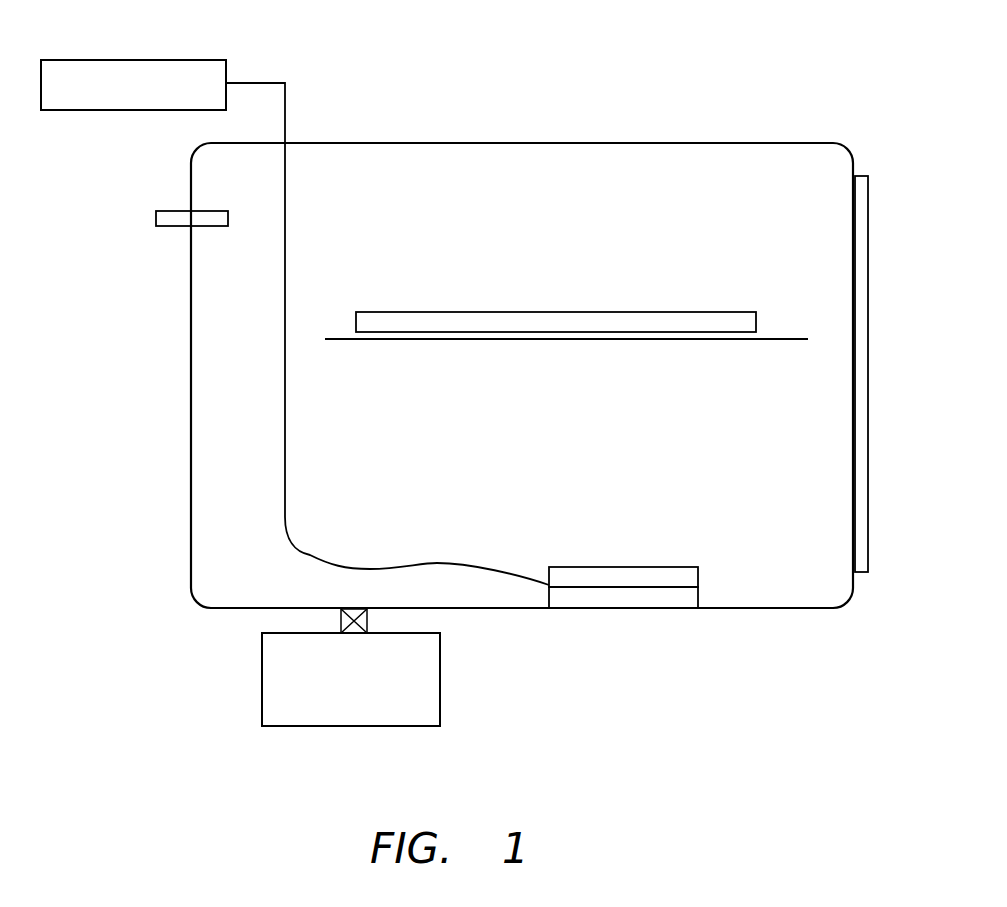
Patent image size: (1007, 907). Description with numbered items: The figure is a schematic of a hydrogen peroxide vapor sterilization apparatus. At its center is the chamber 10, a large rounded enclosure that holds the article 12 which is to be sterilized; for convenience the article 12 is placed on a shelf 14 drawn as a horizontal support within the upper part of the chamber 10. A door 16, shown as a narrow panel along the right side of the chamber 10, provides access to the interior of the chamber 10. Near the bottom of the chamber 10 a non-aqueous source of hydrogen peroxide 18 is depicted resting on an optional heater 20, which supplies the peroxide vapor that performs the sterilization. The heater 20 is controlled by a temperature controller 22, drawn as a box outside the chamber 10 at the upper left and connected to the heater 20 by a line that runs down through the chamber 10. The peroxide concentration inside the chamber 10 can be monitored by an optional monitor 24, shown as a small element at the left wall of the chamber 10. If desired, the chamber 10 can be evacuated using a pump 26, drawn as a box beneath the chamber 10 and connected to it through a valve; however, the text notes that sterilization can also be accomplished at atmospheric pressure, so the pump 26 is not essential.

The chamber 10 is at (499, 98).
The article 12 is at (657, 312).
The shelf 14 is at (780, 339).
The door 16 is at (868, 233).
The non-aqueous source of hydrogen peroxide 18 is at (670, 567).
The heater 20 is at (636, 609).
The temperature controller 22 is at (108, 60).
The monitor 24 is at (177, 226).
The pump 26 is at (362, 727).